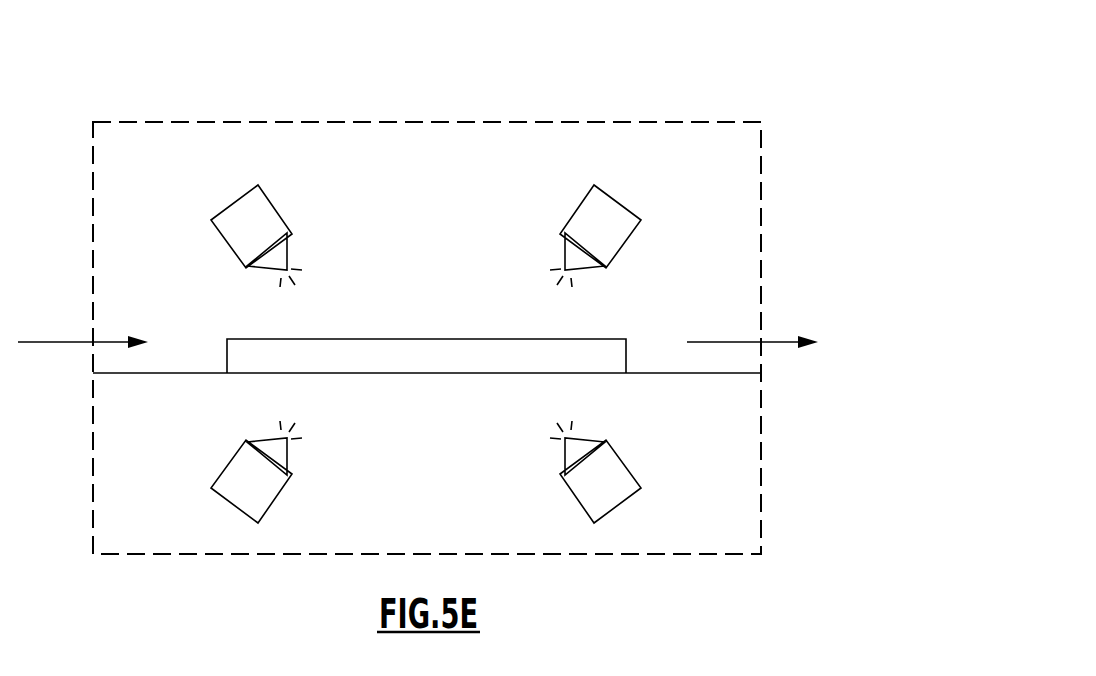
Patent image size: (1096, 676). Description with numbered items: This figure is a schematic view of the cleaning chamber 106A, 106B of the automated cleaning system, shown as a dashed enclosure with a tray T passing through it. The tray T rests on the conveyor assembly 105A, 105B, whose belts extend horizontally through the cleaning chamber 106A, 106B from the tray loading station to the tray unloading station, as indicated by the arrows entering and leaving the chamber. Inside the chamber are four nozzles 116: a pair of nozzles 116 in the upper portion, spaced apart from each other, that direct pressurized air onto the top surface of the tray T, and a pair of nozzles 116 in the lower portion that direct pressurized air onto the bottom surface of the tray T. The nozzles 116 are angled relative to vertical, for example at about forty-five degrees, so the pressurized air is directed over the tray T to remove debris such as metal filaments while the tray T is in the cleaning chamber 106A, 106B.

The cleaning chamber 106A is at (514, 287).
The cleaning chamber 106B is at (776, 73).
The first conveyor assembly 105A is at (502, 390).
The second conveyor assembly 105B is at (702, 373).
The nozzles 116 is at (621, 492).
The tray T is at (615, 339).